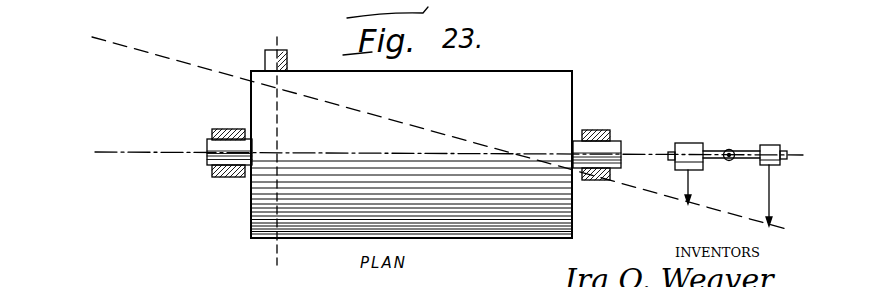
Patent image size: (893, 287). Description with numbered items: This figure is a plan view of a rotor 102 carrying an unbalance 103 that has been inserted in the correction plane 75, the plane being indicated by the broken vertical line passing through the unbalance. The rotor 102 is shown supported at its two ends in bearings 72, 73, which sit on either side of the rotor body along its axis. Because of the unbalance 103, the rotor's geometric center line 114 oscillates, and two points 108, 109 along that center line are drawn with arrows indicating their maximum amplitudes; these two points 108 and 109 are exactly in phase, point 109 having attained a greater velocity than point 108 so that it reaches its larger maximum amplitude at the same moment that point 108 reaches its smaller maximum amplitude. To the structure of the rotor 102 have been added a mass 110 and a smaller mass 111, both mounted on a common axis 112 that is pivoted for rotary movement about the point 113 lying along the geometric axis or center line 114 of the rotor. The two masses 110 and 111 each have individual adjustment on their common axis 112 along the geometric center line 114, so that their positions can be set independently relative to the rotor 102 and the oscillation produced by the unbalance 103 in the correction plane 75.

The left bearing 72 is at (222, 128).
The right bearing 73 is at (597, 128).
The correction plane 75 is at (273, 162).
The rotor 102 is at (445, 107).
The unbalance 103 is at (287, 57).
The point 108 is at (690, 206).
The point 109 is at (765, 227).
The mass 110 is at (687, 143).
The smaller mass 111 is at (768, 147).
The common axis 112 is at (747, 160).
The pivot point 113 is at (729, 150).
The geometric center line 114 is at (429, 153).